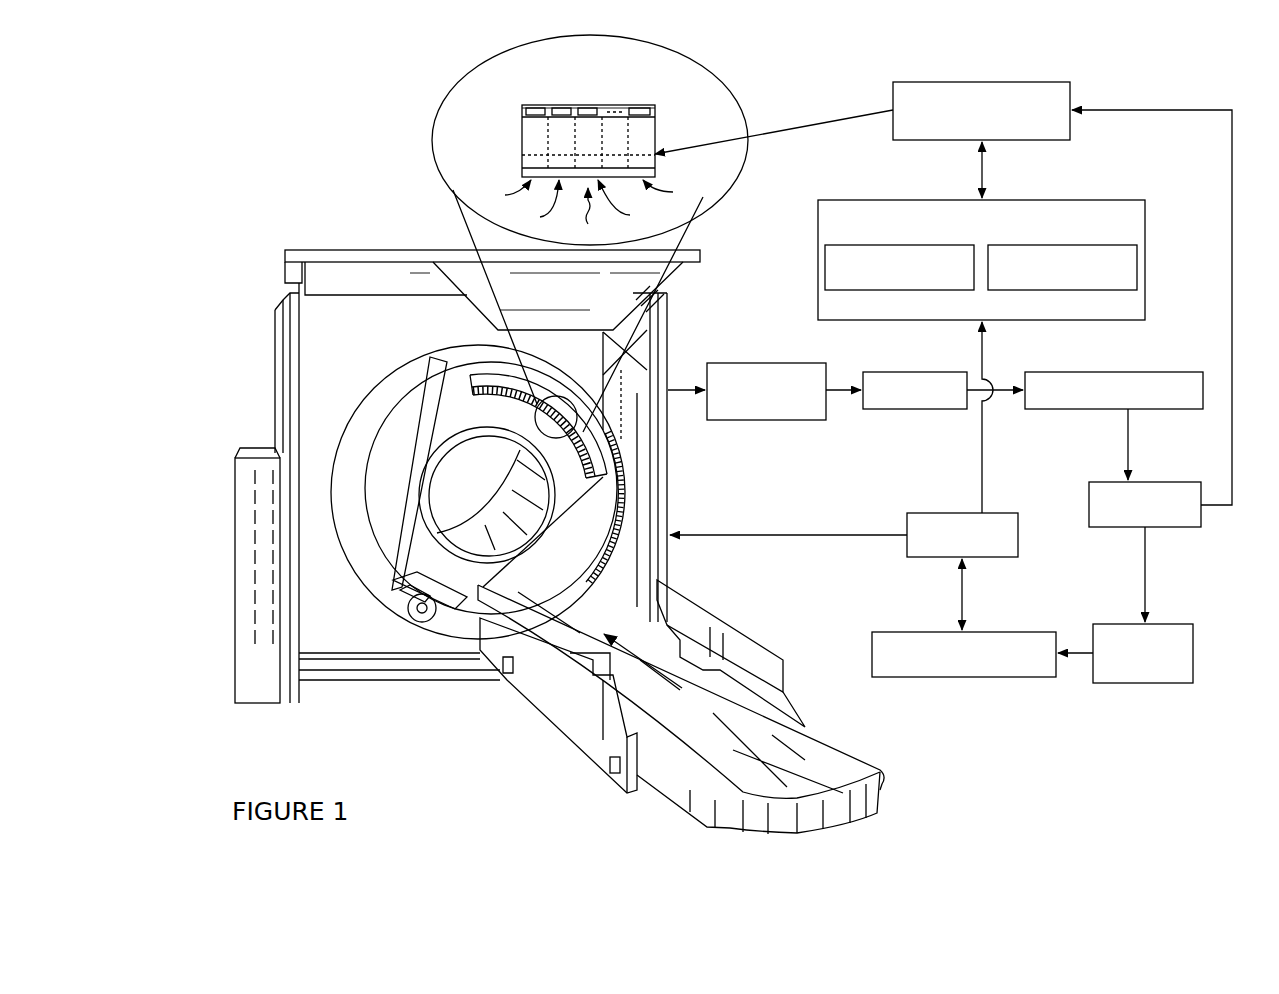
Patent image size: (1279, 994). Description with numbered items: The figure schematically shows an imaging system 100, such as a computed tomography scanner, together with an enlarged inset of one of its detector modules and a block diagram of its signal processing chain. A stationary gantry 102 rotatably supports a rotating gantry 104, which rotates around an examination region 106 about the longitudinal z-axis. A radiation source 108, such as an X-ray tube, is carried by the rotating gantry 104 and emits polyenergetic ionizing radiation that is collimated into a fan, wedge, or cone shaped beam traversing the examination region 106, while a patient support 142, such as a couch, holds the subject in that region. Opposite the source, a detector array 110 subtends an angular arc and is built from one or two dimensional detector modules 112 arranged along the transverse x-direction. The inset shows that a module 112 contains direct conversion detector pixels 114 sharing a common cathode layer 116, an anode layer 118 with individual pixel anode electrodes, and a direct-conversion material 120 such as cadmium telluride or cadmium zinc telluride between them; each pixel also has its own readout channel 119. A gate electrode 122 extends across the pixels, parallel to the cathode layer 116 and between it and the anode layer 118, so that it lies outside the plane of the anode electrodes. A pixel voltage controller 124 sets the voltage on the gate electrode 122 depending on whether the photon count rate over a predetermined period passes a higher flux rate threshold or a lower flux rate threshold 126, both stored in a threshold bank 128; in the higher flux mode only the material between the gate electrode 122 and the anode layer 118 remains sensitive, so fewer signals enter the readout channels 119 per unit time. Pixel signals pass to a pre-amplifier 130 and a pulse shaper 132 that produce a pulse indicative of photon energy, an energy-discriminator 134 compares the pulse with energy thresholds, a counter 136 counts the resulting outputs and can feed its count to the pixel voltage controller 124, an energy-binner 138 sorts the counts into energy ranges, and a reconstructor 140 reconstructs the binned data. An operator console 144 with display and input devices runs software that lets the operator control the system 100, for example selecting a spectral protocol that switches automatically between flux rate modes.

The imaging system 100 is at (296, 180).
The stationary gantry 102 is at (292, 361).
The rotating gantry 104 is at (448, 410).
The examination region 106 is at (486, 503).
The radiation source 108 is at (421, 612).
The detector array 110 is at (585, 431).
The detector module 112 is at (445, 100).
The direct conversion detector pixels 114 is at (592, 206).
The cathode layer 116 is at (655, 173).
The anode layer 118 is at (560, 107).
The readout channels 119 is at (568, 105).
The direct-conversion material 120 is at (522, 135).
The gate electrode 122 is at (522, 157).
The pixel voltage controller 124 is at (1030, 141).
The lower flux rate threshold 126 is at (1060, 290).
The threshold bank 128 is at (1115, 200).
The pre-amplifier 130 is at (758, 363).
The pulse shaper 132 is at (913, 372).
The energy-discriminator 134 is at (1117, 372).
The counter 136 is at (1158, 527).
The energy-binner 138 is at (1143, 684).
The reconstructor 140 is at (962, 677).
The patient support 142 is at (820, 762).
The operator console 144 is at (920, 557).